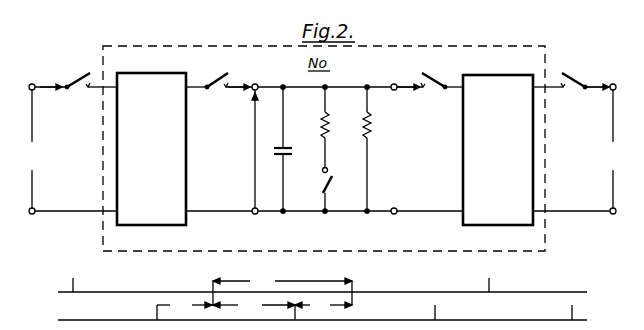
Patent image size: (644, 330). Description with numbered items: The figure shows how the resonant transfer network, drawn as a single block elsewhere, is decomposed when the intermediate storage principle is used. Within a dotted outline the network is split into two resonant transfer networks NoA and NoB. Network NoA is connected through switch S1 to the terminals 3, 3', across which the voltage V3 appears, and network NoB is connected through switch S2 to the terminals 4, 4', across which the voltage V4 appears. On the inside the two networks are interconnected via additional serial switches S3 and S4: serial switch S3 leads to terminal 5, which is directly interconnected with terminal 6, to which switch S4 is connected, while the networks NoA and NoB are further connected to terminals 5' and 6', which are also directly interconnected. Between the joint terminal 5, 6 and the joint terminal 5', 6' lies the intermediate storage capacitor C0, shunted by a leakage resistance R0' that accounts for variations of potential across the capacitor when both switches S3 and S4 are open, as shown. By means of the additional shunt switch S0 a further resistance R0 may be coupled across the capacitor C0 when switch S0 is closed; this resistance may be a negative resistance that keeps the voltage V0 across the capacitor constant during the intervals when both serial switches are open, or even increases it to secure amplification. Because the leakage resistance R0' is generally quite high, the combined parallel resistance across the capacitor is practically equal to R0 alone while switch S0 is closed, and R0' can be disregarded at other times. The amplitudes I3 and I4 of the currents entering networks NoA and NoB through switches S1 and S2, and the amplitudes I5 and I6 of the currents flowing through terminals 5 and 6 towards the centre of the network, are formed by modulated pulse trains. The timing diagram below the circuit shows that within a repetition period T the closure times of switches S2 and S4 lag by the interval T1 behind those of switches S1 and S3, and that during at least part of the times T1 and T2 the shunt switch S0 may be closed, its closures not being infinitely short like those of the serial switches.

The terminal 3 is at (30, 78).
The terminal 3' is at (32, 221).
The terminal 4 is at (612, 77).
The terminal 4' is at (612, 221).
The terminal 5 is at (256, 78).
The terminal 5' is at (258, 220).
The terminal 6 is at (394, 78).
The terminal 6' is at (396, 220).
The switch S1 is at (81, 72).
The switch S2 is at (575, 72).
The serial switch S3 is at (215, 73).
The serial switch S4 is at (435, 72).
The shunt switch S0 is at (337, 190).
The intermediate storage capacitor C0 is at (290, 149).
The further resistance R0 is at (335, 149).
The leakage resistance R0' is at (379, 149).
The resonant transfer network NoA is at (160, 124).
The resonant transfer network NoB is at (506, 124).
The voltage across capacitor V0 is at (248, 149).
The voltage V3 is at (33, 158).
The voltage V4 is at (614, 158).
The current amplitude I3 is at (51, 78).
The current amplitude I4 is at (598, 95).
The current amplitude I5 is at (239, 95).
The current amplitude I6 is at (408, 95).
The period T is at (282, 282).
The time interval T1 is at (254, 306).
The time interval T2 is at (262, 306).